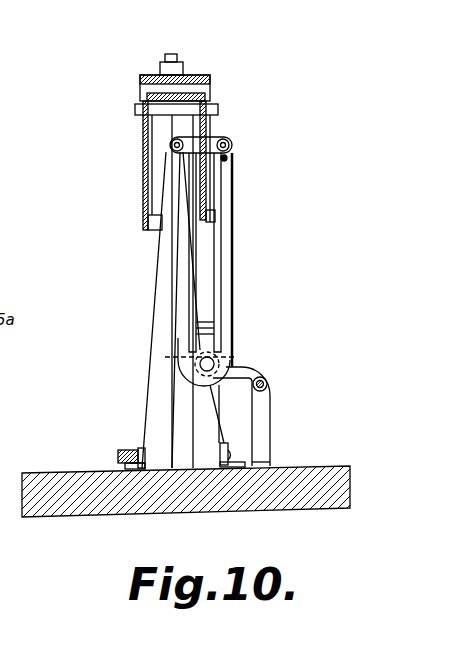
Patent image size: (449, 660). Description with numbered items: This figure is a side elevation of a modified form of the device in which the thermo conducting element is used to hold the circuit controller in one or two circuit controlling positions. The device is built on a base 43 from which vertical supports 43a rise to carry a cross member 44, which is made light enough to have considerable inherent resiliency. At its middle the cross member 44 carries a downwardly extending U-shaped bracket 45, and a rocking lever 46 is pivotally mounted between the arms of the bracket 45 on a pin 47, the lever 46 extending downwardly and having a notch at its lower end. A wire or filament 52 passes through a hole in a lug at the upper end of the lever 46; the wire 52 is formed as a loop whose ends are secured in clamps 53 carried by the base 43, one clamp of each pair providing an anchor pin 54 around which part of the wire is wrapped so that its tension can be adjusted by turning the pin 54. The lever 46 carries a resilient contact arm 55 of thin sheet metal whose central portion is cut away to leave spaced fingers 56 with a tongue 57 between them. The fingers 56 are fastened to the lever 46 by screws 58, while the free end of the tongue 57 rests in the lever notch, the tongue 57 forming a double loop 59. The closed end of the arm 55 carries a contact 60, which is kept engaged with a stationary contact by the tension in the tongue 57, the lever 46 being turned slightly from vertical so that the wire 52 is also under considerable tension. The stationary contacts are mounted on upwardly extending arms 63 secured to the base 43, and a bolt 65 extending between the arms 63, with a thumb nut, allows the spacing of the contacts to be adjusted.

The base 43 is at (72, 474).
The vertical supports 43a is at (178, 410).
The cross member 44 is at (197, 75).
The U-shaped bracket 45 is at (162, 75).
The rocking lever 46 is at (206, 132).
The pin 47 is at (220, 108).
The wire 52 is at (158, 300).
The clamps 53 is at (142, 468).
The anchor pin 54 is at (136, 448).
The contact arm 55 is at (222, 358).
The fingers 56 is at (176, 270).
The tongue 57 is at (226, 303).
The screws 58 is at (172, 147).
The double loop 59 is at (190, 333).
The contact 60 is at (166, 357).
The arms 63 is at (262, 436).
The bolt 65 is at (268, 383).